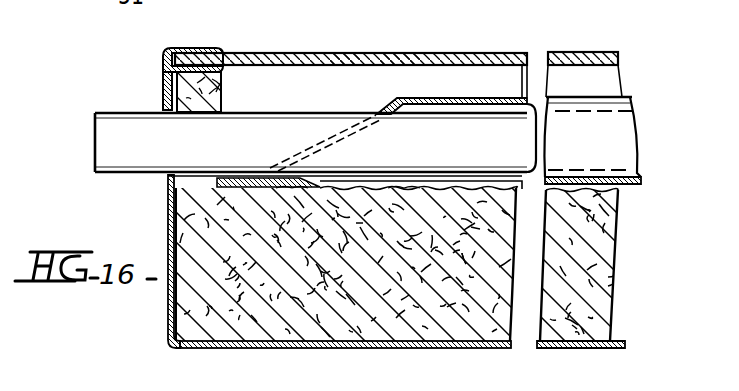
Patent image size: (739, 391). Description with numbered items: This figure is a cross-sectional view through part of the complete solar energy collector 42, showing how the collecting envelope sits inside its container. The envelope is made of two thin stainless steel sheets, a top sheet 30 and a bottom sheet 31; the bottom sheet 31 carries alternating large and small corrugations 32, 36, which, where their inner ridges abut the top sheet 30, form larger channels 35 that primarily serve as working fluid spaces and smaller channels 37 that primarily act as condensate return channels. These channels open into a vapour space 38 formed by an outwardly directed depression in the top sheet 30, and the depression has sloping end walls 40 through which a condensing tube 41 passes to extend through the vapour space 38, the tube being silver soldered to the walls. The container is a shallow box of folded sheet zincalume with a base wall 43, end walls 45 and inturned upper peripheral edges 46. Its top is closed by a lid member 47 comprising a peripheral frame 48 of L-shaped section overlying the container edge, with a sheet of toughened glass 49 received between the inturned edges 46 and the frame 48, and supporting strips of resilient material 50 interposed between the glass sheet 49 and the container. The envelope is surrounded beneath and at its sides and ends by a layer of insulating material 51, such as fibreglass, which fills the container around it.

The top sheet 30 is at (259, 160).
The bottom sheet 31 is at (216, 194).
The large width corrugations 32 is at (294, 190).
The channels 35 is at (286, 190).
The small width corrugations 36 is at (397, 190).
The condensate return channels 37 is at (413, 190).
The vapour space 38 is at (473, 110).
The sloping end walls 40 is at (384, 110).
The condensing tube 41 is at (130, 128).
The solar energy collector 42 is at (396, 46).
The base wall 43 is at (183, 352).
The end walls 45 is at (167, 318).
The inturned upper peripheral edges 46 is at (198, 78).
The lid member 47 is at (298, 20).
The peripheral frame 48 is at (183, 48).
The sheet of toughened glass 49 is at (338, 62).
The supporting strips of resilient material 50 is at (162, 63).
The layer of insulating material 51 is at (470, 262).